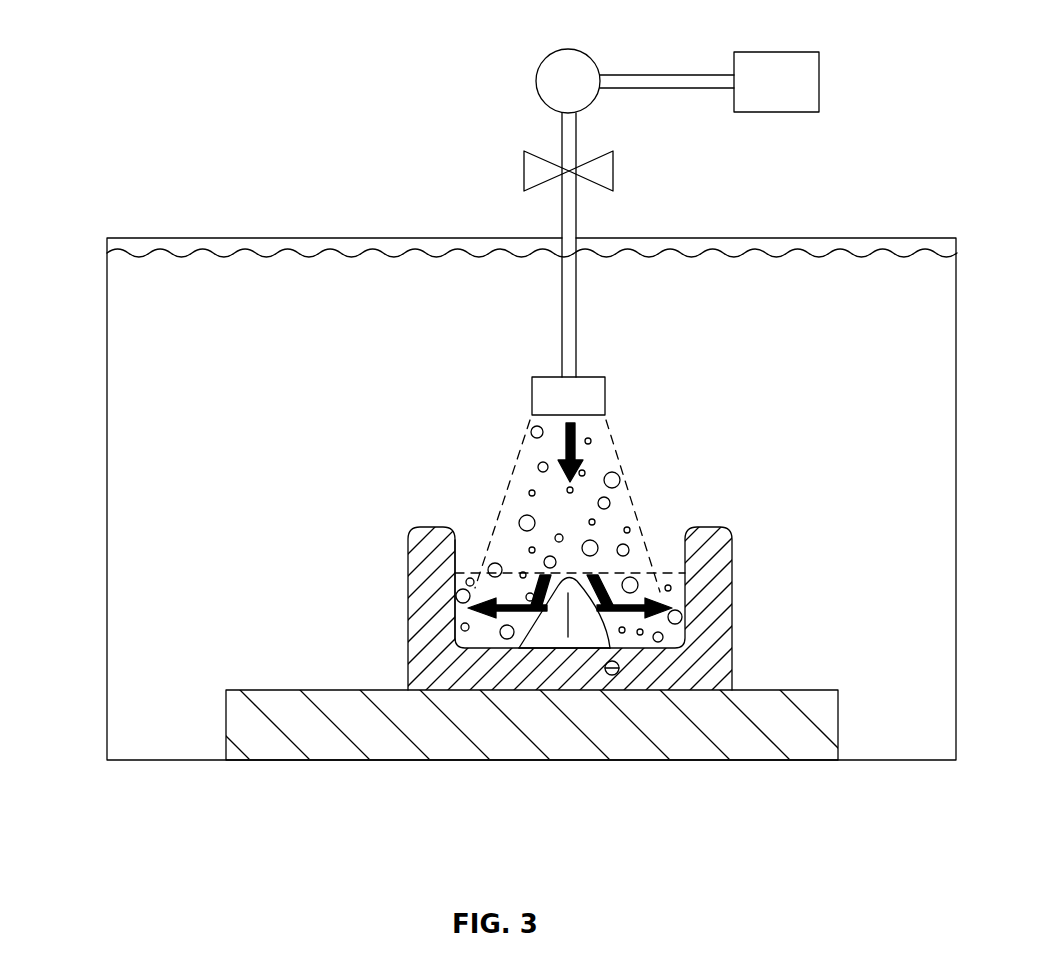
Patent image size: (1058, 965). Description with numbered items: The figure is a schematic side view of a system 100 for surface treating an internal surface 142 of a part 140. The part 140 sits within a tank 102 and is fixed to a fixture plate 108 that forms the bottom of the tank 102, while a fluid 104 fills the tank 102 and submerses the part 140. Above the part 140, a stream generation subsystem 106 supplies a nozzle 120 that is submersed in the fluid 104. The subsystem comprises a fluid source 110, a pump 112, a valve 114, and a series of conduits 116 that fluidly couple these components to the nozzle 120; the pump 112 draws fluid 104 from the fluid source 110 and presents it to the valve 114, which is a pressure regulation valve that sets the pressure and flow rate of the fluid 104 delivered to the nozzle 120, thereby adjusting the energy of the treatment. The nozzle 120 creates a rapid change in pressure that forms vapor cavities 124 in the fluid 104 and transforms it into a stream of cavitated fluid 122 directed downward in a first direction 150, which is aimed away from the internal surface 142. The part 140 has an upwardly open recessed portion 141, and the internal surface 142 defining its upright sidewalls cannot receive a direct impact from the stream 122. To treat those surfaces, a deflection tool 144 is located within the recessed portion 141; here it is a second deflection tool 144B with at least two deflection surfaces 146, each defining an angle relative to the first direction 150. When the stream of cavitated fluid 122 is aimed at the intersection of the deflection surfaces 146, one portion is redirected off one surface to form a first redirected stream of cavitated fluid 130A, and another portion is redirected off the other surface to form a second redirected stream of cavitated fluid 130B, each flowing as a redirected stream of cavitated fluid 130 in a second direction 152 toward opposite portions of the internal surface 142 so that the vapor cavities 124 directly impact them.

The system 100 is at (888, 180).
The tank 102 is at (107, 428).
The fluid 104 is at (275, 243).
The stream generation subsystem 106 is at (476, 66).
The fixture plate 108 is at (240, 690).
The fluid source 110 is at (820, 64).
The pump 112 is at (588, 51).
The valve 114 is at (524, 170).
The conduits 116 is at (647, 75).
The nozzle 120 is at (586, 374).
The stream of cavitated fluid 122 is at (516, 436).
The vapor cavities 124 is at (594, 441).
The redirected stream of cavitated fluid 130 is at (574, 593).
The first redirected stream of cavitated fluid 130A is at (478, 558).
The second redirected stream of cavitated fluid 130B is at (665, 558).
The part 140 is at (398, 587).
The recessed portion 141 is at (459, 538).
The internal surface 142 is at (463, 600).
The deflection tool 144 is at (525, 670).
The second deflection tool 144B is at (520, 618).
The deflection surface 146 is at (563, 664).
The first direction 150 is at (580, 430).
The second direction 152 is at (496, 630).